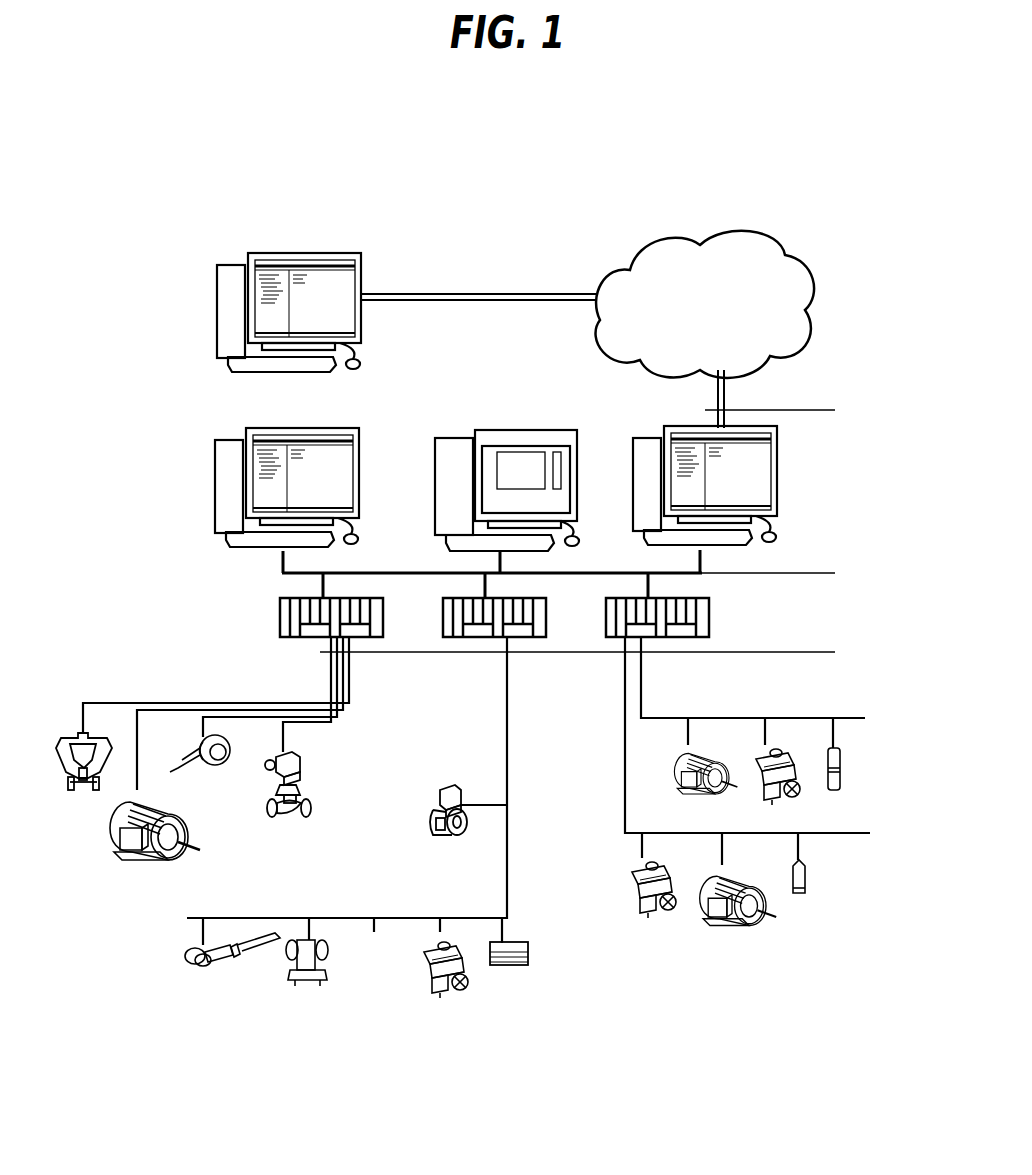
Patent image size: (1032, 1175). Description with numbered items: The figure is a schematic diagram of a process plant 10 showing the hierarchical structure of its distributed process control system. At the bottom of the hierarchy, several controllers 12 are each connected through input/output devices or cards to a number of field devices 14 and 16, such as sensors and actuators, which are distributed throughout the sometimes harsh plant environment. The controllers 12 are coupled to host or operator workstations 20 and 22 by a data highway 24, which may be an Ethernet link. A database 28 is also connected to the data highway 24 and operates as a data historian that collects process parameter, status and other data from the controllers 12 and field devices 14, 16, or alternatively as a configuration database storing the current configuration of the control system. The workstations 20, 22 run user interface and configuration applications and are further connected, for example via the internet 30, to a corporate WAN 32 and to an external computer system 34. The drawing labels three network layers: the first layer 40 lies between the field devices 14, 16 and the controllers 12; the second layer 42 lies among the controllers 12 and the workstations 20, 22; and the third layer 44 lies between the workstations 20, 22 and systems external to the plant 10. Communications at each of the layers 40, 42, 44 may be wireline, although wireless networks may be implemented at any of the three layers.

The process plant 10 is at (166, 395).
The controller 12 is at (279, 623).
The field device 14 is at (311, 805).
The field device 16 is at (76, 740).
The operator workstation 20 is at (778, 460).
The operator workstation 22 is at (214, 456).
The data highway 24 is at (402, 572).
The database 28 is at (500, 438).
The internet 30 is at (541, 294).
The corporate WAN 32 is at (765, 228).
The computer system 34 is at (231, 276).
The first layer (level one) 40 is at (806, 651).
The second layer (level two) 42 is at (806, 572).
The third layer (level three) 44 is at (812, 408).